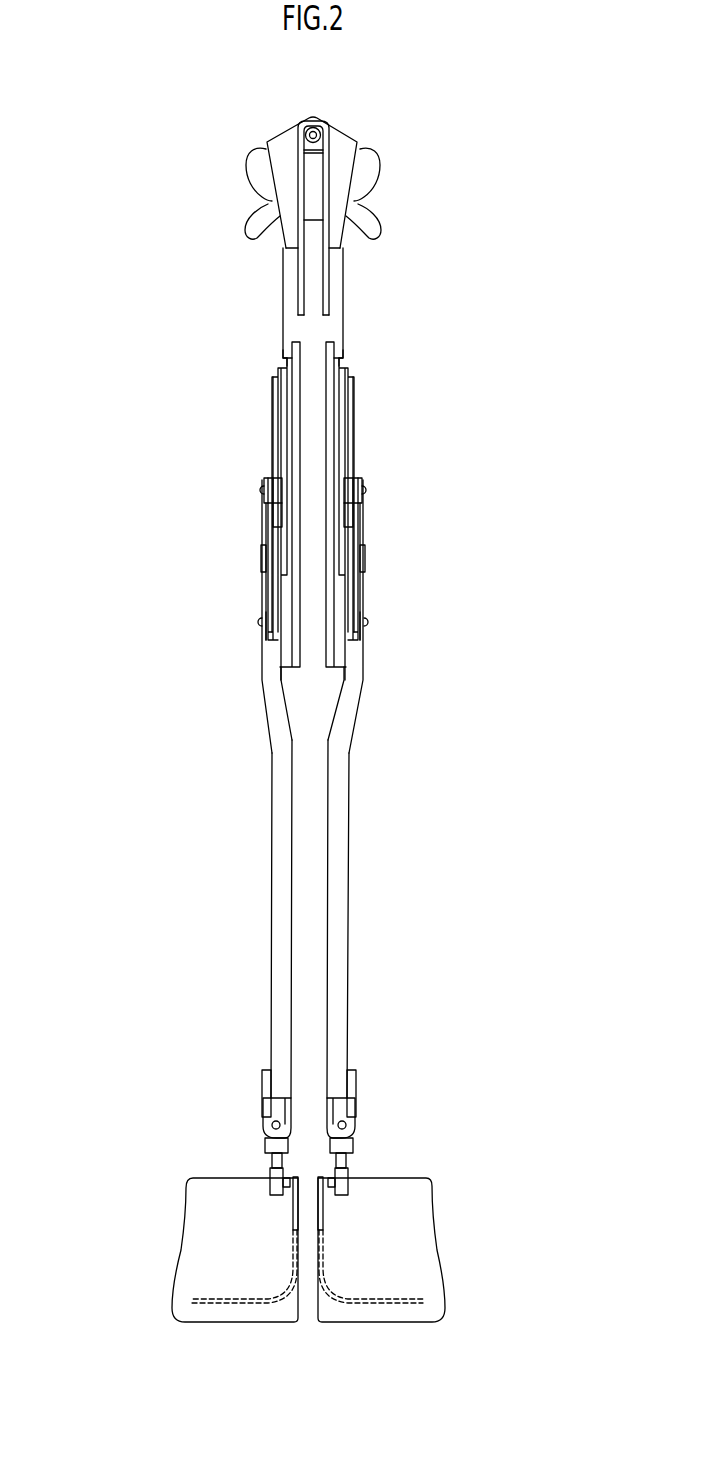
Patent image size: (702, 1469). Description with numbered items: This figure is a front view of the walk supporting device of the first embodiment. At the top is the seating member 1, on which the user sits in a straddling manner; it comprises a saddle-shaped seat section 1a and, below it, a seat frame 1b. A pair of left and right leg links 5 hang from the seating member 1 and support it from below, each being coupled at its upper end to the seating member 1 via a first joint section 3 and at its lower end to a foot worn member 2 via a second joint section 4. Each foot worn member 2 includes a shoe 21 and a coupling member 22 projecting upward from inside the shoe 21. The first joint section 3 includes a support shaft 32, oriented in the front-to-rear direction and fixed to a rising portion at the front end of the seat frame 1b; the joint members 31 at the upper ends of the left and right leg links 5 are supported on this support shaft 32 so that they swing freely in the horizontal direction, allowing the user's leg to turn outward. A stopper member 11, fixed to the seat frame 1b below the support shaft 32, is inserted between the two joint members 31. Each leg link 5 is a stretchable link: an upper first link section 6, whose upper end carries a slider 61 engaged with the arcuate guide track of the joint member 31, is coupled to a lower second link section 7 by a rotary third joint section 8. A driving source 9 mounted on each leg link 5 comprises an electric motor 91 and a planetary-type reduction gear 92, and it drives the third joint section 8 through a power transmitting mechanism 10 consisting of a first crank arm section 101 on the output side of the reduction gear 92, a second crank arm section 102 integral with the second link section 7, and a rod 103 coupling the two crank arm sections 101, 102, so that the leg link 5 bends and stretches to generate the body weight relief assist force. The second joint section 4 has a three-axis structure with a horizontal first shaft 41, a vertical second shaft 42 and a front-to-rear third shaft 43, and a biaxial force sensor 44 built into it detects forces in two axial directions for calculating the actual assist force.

The seating member 1 is at (310, 187).
The seat section 1a is at (374, 209).
The seat frame 1b is at (363, 167).
The foot worn member 2 is at (306, 1256).
The first joint section 3 is at (268, 187).
The second joint section 4 is at (308, 1121).
The leg link 5 is at (312, 517).
The first link section 6 is at (296, 392).
The second link section 7 is at (283, 802).
The third joint section 8 is at (258, 650).
The driving source 9 is at (311, 519).
The power transmitting mechanism 10 is at (312, 561).
The stopper member 11 is at (313, 186).
The shoe 21 is at (180, 1252).
The coupling member 22 is at (292, 1217).
The joint member 31 is at (312, 297).
The support shaft 32 is at (313, 124).
The first shaft 41 is at (308, 1170).
The second shaft 42 is at (268, 1160).
The third shaft 43 is at (263, 1117).
The biaxial force sensor 44 is at (262, 1077).
The slider 61 is at (283, 326).
The electric motor 91 is at (272, 441).
The reduction gear 92 is at (262, 551).
The first crank arm section 101 is at (260, 488).
The second crank arm section 102 is at (264, 631).
The rod 103 is at (262, 564).